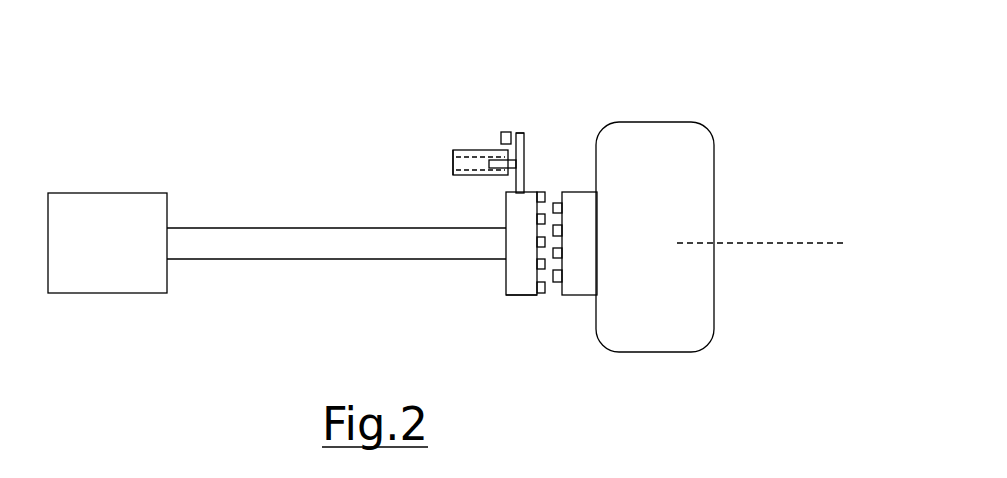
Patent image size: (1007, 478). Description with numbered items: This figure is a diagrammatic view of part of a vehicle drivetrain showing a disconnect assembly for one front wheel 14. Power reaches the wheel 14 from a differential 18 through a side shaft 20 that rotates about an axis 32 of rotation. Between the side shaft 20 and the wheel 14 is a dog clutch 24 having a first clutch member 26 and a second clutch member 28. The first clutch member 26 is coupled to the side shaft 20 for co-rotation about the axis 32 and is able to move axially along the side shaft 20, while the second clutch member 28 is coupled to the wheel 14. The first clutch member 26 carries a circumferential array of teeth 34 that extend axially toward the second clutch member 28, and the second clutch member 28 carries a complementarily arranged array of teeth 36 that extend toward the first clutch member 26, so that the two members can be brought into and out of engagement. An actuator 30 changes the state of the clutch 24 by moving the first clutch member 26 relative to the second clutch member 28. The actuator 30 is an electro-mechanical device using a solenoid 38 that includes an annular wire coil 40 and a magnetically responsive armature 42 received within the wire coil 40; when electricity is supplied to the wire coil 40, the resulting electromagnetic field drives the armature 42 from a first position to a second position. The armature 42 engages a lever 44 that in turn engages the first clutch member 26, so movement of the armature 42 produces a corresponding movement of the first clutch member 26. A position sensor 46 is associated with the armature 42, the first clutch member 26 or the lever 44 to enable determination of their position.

The front wheel 14 is at (683, 142).
The differential 18 is at (132, 202).
The side shaft 20 is at (223, 240).
The clutch 24 is at (540, 340).
The first clutch member 26 is at (515, 287).
The second clutch member 28 is at (578, 230).
The actuator 30 is at (486, 124).
The axis of rotation 32 is at (770, 243).
The teeth 34 is at (543, 192).
The teeth 36 is at (555, 207).
The solenoid 38 is at (455, 184).
The wire coil 40 is at (463, 155).
The armature 42 is at (513, 165).
The lever 44 is at (518, 133).
The position sensor 46 is at (507, 132).